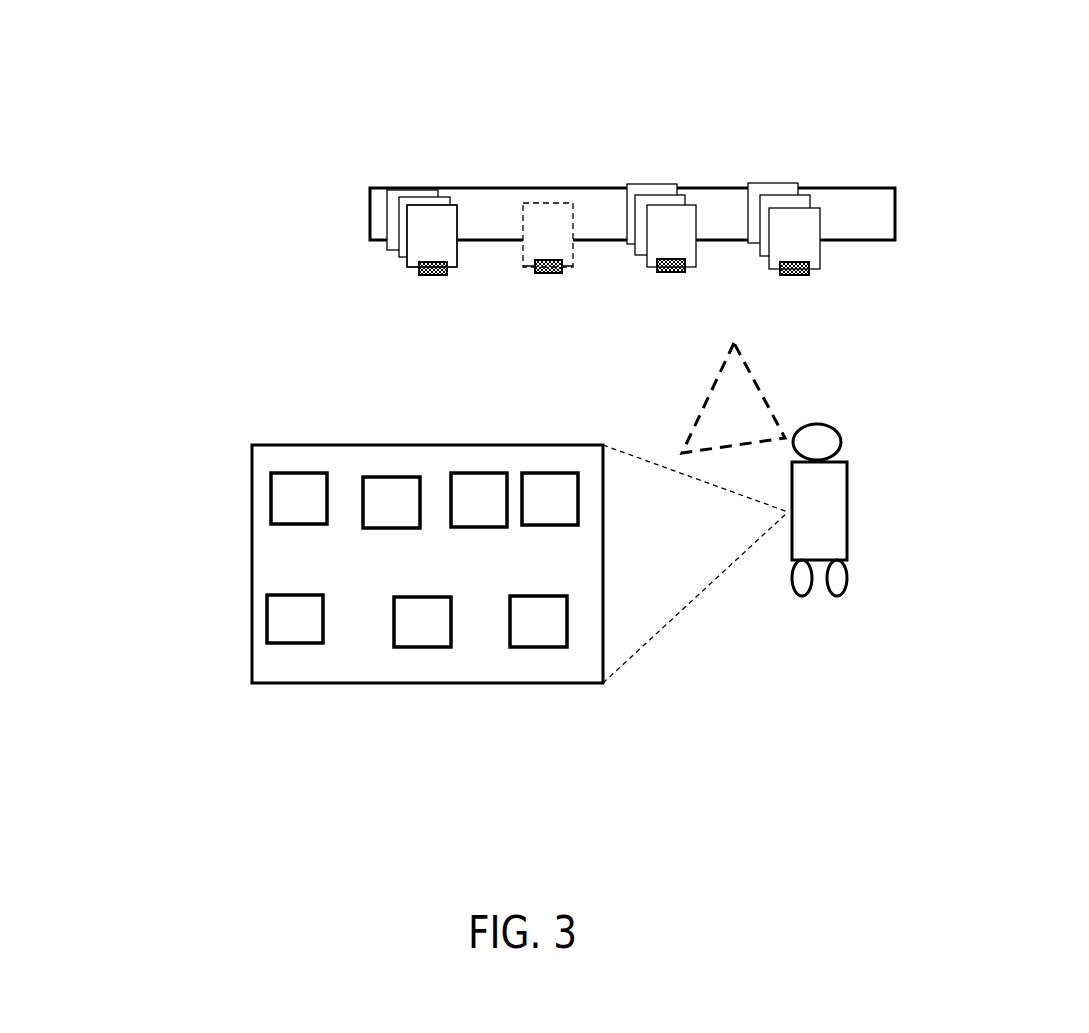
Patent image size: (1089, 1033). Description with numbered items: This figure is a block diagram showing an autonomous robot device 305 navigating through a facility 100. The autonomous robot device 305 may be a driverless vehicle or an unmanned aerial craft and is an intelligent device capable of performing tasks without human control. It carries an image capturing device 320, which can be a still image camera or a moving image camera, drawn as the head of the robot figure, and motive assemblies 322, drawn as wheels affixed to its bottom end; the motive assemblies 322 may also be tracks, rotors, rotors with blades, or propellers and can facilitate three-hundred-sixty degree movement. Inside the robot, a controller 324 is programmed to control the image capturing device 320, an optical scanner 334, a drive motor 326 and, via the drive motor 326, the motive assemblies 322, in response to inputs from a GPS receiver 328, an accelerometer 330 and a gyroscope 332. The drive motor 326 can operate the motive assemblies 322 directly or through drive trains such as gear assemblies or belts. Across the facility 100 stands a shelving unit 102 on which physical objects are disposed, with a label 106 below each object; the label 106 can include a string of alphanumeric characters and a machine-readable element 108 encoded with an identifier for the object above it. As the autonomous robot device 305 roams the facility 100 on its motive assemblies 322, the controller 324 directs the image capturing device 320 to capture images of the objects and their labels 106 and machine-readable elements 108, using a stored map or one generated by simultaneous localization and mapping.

The facility 100 is at (175, 70).
The shelving unit 102 is at (505, 193).
The label 106 is at (433, 275).
The machine-readable element 108 is at (418, 273).
The autonomous robot device 305 is at (873, 506).
The image capturing device 320 is at (842, 442).
The motive assemblies 322 is at (872, 615).
The controller 324 is at (267, 620).
The drive motor 326 is at (273, 498).
The GPS receiver 328 is at (392, 475).
The accelerometer 330 is at (478, 473).
The gyroscope 332 is at (550, 647).
The optical scanner 334 is at (552, 472).